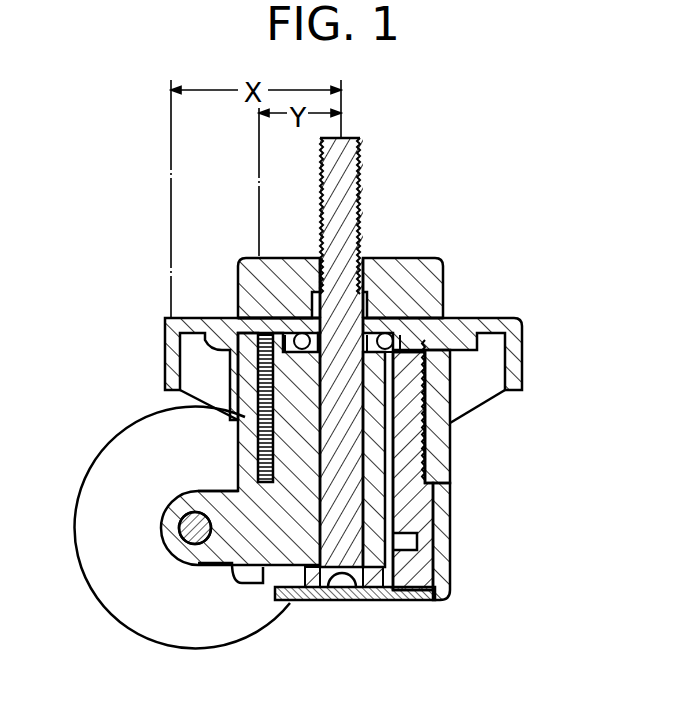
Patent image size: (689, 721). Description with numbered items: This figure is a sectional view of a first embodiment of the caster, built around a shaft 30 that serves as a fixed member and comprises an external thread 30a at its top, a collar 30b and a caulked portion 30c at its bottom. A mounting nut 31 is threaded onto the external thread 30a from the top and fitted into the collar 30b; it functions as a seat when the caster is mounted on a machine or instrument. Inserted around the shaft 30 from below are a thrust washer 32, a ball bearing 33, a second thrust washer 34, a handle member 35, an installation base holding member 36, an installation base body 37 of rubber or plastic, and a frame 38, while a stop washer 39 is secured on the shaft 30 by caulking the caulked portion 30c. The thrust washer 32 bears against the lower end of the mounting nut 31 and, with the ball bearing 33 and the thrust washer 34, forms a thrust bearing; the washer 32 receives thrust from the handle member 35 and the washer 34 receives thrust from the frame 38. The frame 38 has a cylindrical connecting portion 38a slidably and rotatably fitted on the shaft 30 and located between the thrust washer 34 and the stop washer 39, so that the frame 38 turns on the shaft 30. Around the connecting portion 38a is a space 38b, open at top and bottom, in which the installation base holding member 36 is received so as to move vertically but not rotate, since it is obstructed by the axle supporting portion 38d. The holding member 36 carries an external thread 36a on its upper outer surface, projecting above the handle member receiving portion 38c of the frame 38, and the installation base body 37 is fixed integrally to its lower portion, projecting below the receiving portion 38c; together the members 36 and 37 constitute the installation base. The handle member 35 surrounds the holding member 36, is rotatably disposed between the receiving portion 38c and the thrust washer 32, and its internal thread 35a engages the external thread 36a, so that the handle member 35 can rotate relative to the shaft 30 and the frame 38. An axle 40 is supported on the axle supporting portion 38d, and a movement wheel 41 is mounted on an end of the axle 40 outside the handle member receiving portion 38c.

The shaft 30 is at (433, 485).
The external thread 30a is at (360, 176).
The collar 30b is at (383, 296).
The caulked portion 30c is at (350, 596).
The mounting nut 31 is at (382, 258).
The thrust washer 32 is at (232, 316).
The ball bearing 33 is at (397, 312).
The thrust washer 34 is at (265, 376).
The handle member 35 is at (165, 350).
The internal thread 35a is at (237, 421).
The installation base holding member 36 is at (450, 393).
The external thread 36a is at (520, 378).
The installation base body 37 is at (417, 602).
The frame 38 is at (448, 548).
The cylindrical connecting portion 38a is at (412, 447).
The space 38b is at (448, 508).
The handle member receiving portion 38c is at (447, 565).
The axle supporting portion 38d is at (233, 568).
The stop washer 39 is at (297, 600).
The axle 40 is at (180, 551).
The movement wheel 41 is at (82, 495).